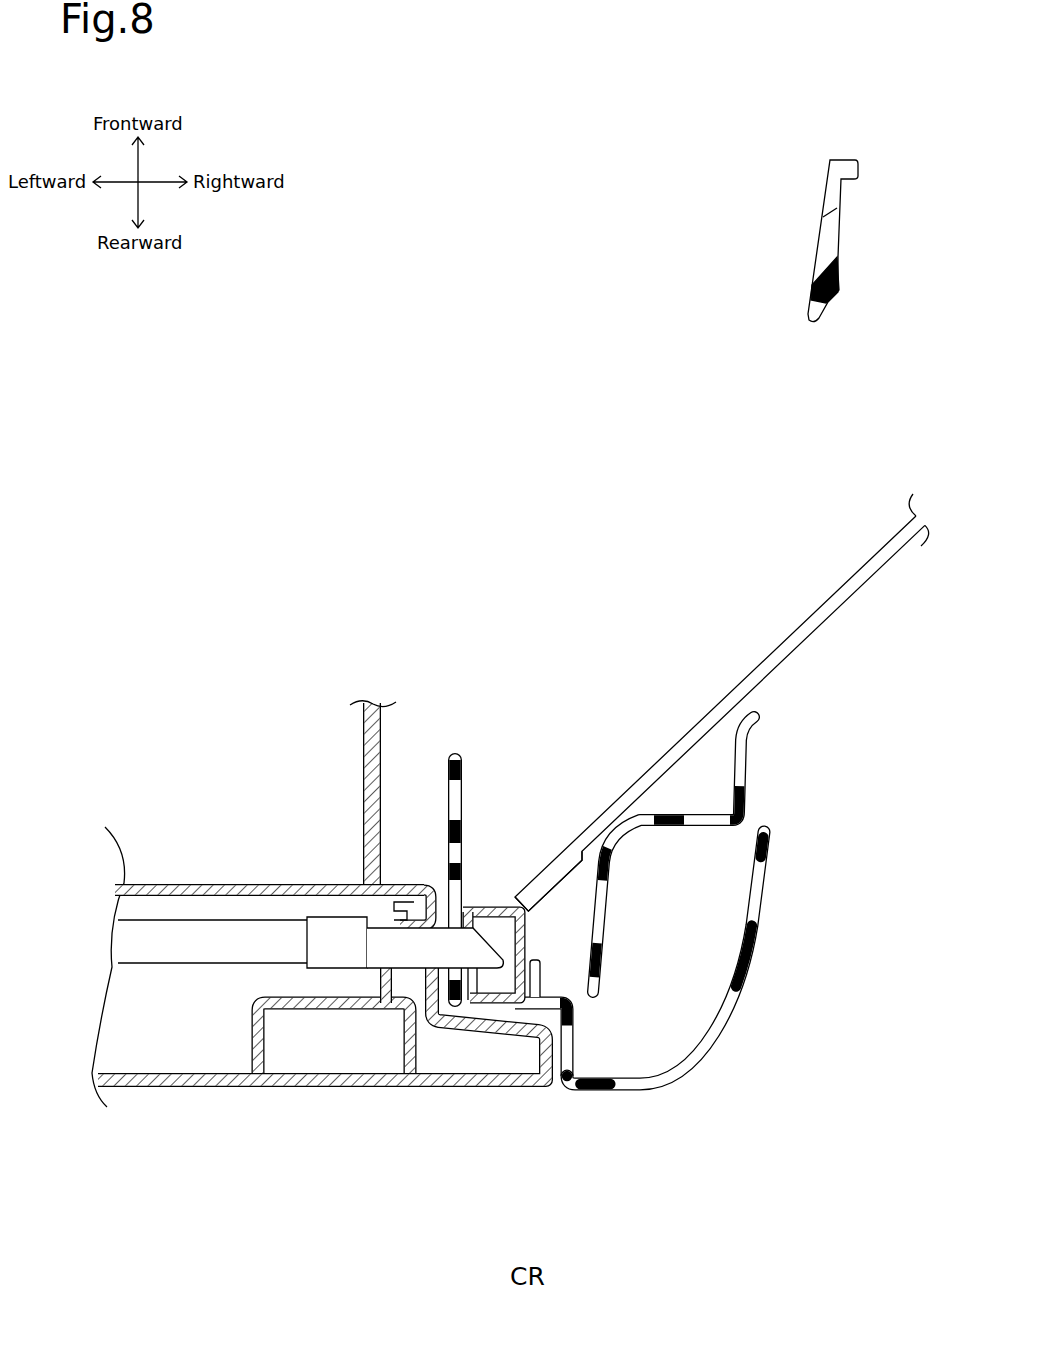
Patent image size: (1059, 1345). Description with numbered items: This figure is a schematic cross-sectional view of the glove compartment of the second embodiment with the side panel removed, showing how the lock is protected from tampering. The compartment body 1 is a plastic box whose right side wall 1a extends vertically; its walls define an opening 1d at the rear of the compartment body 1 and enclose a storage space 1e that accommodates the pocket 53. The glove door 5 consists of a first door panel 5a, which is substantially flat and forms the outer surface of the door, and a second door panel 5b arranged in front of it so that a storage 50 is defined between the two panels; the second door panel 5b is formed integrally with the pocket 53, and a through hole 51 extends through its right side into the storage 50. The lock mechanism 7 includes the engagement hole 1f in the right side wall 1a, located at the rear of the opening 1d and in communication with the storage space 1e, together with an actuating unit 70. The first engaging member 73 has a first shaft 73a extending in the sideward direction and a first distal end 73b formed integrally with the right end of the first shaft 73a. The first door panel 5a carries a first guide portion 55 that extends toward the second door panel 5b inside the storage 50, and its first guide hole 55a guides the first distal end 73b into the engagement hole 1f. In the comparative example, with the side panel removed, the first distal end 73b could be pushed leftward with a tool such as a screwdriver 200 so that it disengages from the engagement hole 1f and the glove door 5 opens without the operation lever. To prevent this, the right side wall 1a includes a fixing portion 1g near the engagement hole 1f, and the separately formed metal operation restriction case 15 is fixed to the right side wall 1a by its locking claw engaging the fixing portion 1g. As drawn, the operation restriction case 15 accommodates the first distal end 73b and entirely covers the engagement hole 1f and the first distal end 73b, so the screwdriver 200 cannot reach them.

The compartment body 1 is at (583, 950).
The right side wall 1a is at (633, 1090).
The opening 1d is at (523, 1089).
The storage space 1e is at (429, 862).
The engagement hole 1f is at (472, 968).
The fixing portion 1g is at (590, 990).
The glove door 5 is at (319, 946).
The first door panel 5a is at (163, 1089).
The second door panel 5b is at (410, 887).
The lock mechanism 7 is at (356, 875).
The operation restriction case 15 is at (503, 897).
The storage 50 is at (117, 967).
The through hole 51 is at (407, 966).
The pocket 53 is at (273, 813).
The first guide portion 55 is at (288, 1011).
The first guide hole 55a is at (380, 950).
The actuating unit 70 is at (356, 875).
The first engaging member 73 is at (356, 876).
The first shaft 73a is at (215, 933).
The first distal end 73b is at (480, 946).
The screwdriver 200 is at (800, 629).